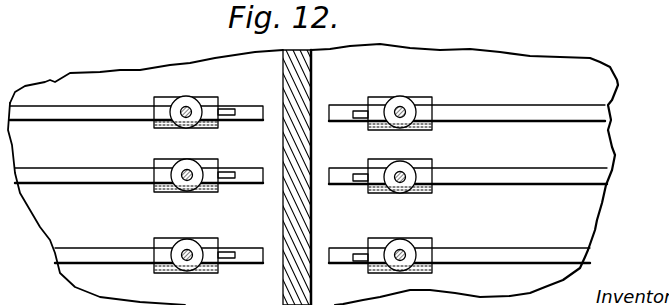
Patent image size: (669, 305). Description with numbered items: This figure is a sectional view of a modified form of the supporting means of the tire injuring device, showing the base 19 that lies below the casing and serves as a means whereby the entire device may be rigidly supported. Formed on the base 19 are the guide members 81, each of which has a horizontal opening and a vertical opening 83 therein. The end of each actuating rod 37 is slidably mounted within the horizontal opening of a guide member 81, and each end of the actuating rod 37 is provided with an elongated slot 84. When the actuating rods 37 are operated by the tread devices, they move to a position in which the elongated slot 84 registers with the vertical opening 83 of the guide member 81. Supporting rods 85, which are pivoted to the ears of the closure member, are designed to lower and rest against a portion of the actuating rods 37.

The base 19 is at (301, 171).
The actuating rod 37 is at (72, 113).
The guide member 81 is at (206, 193).
The vertical opening 83 is at (128, 0).
The elongated slot 84 is at (222, 115).
The supporting rod 85 is at (182, 114).